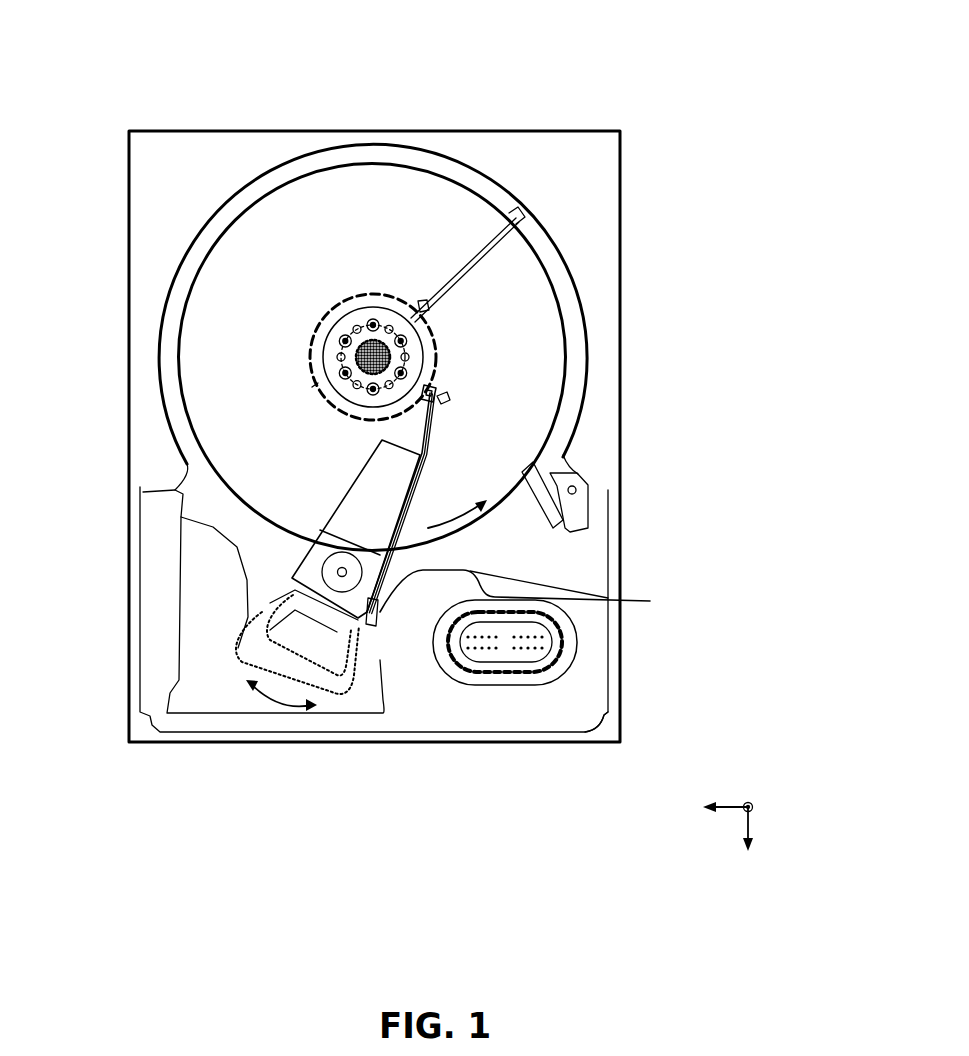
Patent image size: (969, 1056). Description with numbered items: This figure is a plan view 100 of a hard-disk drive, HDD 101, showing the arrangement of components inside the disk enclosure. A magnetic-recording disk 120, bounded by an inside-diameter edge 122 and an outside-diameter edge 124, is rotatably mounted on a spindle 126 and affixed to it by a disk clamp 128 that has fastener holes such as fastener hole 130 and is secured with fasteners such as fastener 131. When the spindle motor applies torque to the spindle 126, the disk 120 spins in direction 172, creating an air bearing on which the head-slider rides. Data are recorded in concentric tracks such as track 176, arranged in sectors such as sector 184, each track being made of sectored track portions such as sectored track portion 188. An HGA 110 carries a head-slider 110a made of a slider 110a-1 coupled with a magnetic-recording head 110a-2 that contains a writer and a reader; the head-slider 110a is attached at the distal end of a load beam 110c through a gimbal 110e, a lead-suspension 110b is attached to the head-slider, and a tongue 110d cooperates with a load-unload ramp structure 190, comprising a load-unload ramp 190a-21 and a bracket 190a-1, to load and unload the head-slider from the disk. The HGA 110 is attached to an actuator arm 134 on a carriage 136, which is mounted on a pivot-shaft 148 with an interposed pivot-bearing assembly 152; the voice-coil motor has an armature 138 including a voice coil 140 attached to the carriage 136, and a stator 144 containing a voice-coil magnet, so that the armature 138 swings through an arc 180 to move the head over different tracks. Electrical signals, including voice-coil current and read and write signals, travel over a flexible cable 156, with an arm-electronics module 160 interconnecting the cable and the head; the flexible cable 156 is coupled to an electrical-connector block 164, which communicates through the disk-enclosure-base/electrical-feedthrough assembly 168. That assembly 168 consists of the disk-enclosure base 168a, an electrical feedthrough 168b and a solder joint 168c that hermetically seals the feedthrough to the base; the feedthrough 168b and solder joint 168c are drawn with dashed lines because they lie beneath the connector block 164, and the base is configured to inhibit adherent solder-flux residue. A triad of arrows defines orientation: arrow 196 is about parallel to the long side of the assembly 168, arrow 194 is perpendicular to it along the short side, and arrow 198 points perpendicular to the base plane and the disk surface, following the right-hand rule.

The plan view 100 is at (147, 74).
The HDD 101 is at (582, 132).
The HGA 110 is at (602, 401).
The head-slider 110a is at (578, 420).
The slider 110a-1 is at (443, 394).
The magnetic-recording head 110a-2 is at (436, 386).
The lead-suspension 110b is at (447, 397).
The load beam 110c is at (449, 400).
The tongue 110d is at (428, 382).
The gimbal 110e is at (440, 390).
The magnetic-recording disk 120 is at (340, 360).
The inside-diameter edge 122 is at (258, 457).
The outside-diameter edge 124 is at (183, 393).
The spindle 126 is at (371, 355).
The disk clamp 128 is at (323, 342).
The fastener hole 130 is at (371, 322).
The fastener 131 is at (384, 323).
The actuator arm 134 is at (383, 487).
The carriage 136 is at (340, 543).
The armature 138 is at (337, 688).
The voice coil 140 is at (347, 653).
The stator 144 is at (180, 640).
The pivot-shaft 148 is at (338, 571).
The pivot-bearing assembly 152 is at (334, 560).
The flexible cable 156 is at (537, 592).
The arm-electronics module 160 is at (372, 602).
The electrical-connector block 164 is at (577, 648).
The disk-enclosure-base/electrical-feedthrough assembly 168 is at (561, 716).
The disk-enclosure base 168a is at (630, 746).
The electrical feedthrough 168b is at (532, 655).
The solder joint 168c is at (462, 663).
The direction 172 is at (462, 517).
The track 176 is at (315, 387).
The arc 180 is at (282, 702).
The sector 184 is at (525, 215).
The sectored track portion 188 is at (426, 298).
The load-unload ramp structure 190 is at (651, 447).
The bracket 190a-1 is at (572, 508).
The load-unload ramp 190a-21 is at (533, 477).
The arrow 194 is at (733, 805).
The arrow 196 is at (750, 817).
The arrow 198 is at (755, 806).